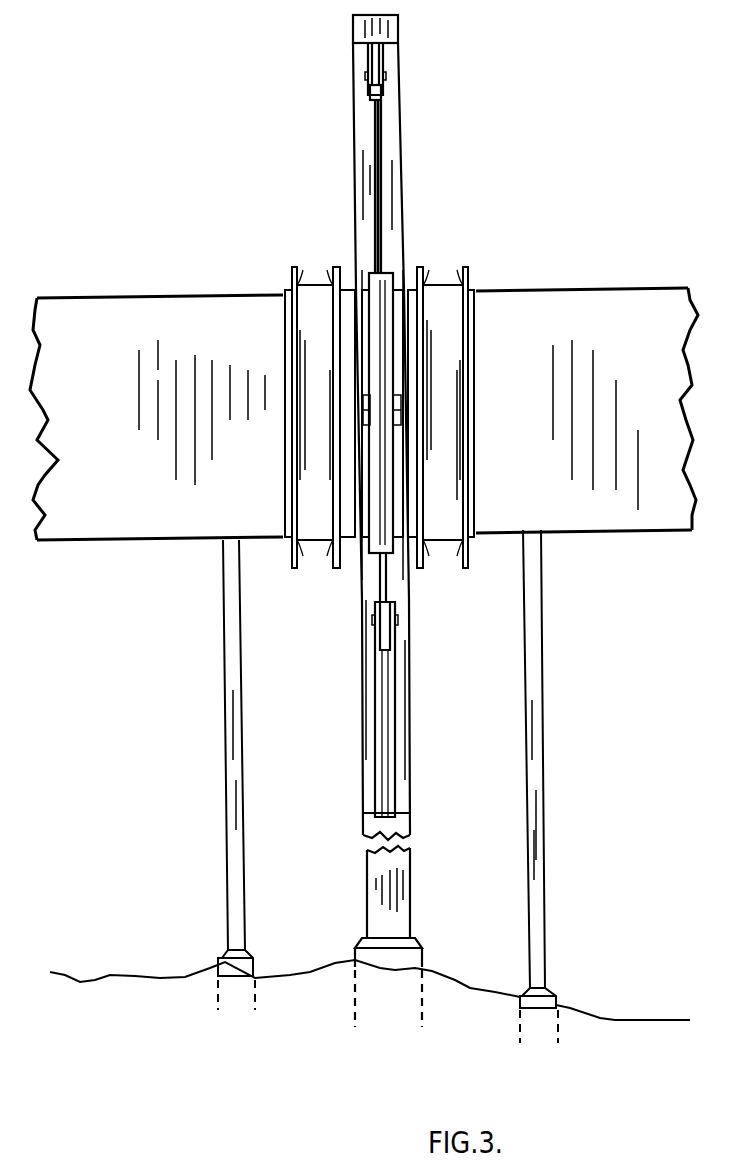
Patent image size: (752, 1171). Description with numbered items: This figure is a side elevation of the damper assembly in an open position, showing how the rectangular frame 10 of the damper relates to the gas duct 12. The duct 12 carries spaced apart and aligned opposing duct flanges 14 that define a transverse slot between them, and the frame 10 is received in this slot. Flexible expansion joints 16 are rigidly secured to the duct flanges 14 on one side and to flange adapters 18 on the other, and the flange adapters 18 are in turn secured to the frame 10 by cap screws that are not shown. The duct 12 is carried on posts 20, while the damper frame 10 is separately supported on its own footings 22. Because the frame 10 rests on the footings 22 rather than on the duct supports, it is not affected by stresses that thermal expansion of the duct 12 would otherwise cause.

The rectangular frame 10 is at (415, 202).
The duct 12 is at (136, 278).
The duct flanges 14 is at (290, 268).
The flexible expansion joints 16 is at (313, 283).
The flange adapters 18 is at (348, 287).
The posts 20 is at (228, 752).
The footings 22 is at (425, 958).